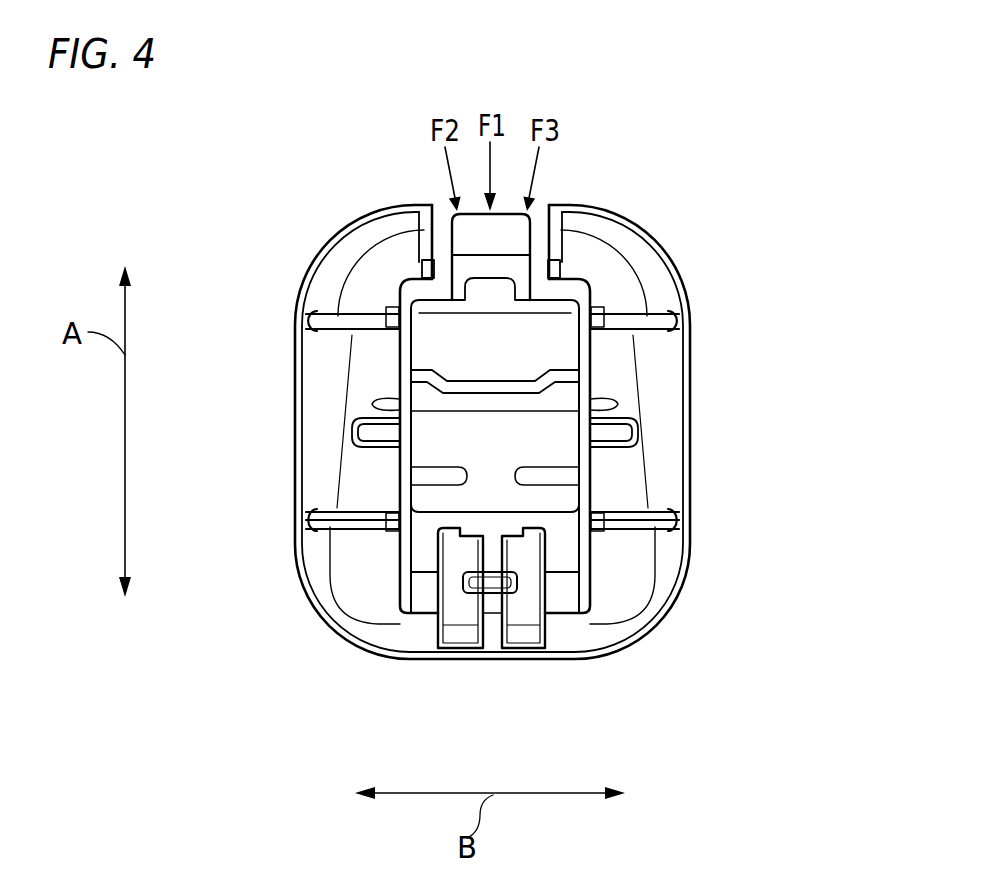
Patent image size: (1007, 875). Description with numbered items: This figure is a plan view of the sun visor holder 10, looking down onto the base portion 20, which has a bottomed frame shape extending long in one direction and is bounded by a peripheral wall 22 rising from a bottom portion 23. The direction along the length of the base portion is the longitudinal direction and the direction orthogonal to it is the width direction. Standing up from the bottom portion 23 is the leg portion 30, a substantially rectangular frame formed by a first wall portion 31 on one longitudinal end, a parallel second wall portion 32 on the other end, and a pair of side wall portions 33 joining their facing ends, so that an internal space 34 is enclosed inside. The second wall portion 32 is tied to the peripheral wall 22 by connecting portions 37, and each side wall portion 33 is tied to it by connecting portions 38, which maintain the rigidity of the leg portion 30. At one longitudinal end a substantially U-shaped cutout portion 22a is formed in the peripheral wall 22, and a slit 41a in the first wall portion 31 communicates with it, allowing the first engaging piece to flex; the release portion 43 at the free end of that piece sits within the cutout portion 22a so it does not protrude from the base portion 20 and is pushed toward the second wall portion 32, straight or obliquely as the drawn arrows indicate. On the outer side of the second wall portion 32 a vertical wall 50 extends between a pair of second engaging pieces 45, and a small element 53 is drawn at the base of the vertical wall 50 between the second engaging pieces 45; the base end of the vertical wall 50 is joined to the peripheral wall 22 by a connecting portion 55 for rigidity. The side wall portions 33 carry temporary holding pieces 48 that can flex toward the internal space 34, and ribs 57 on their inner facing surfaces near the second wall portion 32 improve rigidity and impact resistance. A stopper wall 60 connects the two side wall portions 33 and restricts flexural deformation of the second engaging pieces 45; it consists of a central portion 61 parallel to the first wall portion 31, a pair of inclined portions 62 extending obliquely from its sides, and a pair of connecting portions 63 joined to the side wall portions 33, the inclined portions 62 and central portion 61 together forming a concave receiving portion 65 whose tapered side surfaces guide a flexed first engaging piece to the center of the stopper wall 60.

The sun visor holder 10 is at (326, 208).
The base portion 20 is at (697, 249).
The peripheral wall 22 is at (311, 602).
The cutout portion 22a is at (548, 298).
The bottom portion 23 is at (631, 475).
The leg portion 30 is at (606, 378).
The first wall portion 31 is at (588, 286).
The second wall portion 32 is at (556, 523).
The side wall portion 33 is at (440, 478).
The internal space 34 is at (503, 494).
The connecting portion 37 is at (422, 638).
The connecting portion 38 is at (317, 312).
The slit 41a is at (513, 262).
The release portion 43 is at (498, 228).
The second engaging piece 45 is at (422, 563).
The temporary holding piece 48 is at (366, 436).
The vertical wall 50 is at (497, 557).
The connecting portion 53 is at (477, 584).
The connecting portion 55 is at (492, 637).
The rib 57 is at (387, 496).
The stopper wall 60 is at (450, 358).
The central portion 61 is at (487, 395).
The inclined portion 62 is at (388, 400).
The connecting portion 63 is at (392, 362).
The concave receiving portion 65 is at (503, 356).